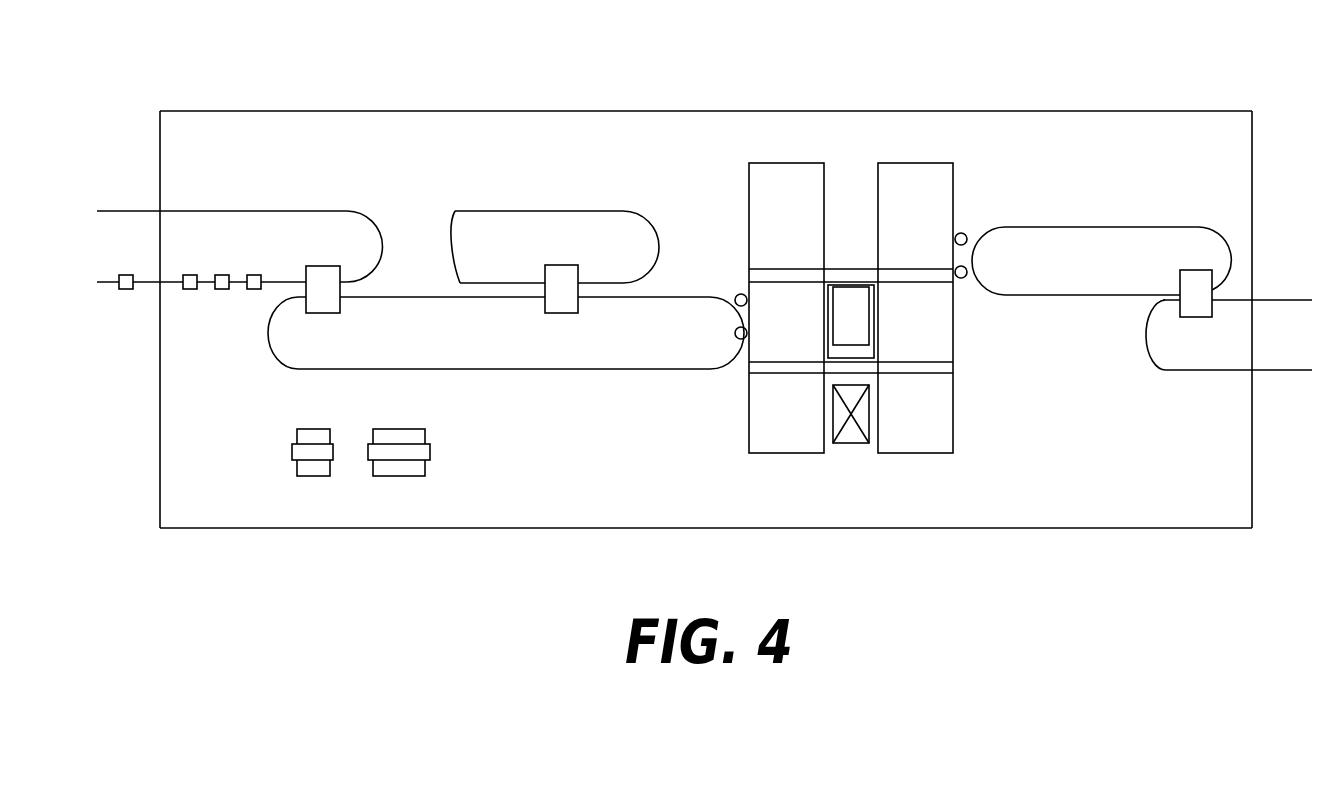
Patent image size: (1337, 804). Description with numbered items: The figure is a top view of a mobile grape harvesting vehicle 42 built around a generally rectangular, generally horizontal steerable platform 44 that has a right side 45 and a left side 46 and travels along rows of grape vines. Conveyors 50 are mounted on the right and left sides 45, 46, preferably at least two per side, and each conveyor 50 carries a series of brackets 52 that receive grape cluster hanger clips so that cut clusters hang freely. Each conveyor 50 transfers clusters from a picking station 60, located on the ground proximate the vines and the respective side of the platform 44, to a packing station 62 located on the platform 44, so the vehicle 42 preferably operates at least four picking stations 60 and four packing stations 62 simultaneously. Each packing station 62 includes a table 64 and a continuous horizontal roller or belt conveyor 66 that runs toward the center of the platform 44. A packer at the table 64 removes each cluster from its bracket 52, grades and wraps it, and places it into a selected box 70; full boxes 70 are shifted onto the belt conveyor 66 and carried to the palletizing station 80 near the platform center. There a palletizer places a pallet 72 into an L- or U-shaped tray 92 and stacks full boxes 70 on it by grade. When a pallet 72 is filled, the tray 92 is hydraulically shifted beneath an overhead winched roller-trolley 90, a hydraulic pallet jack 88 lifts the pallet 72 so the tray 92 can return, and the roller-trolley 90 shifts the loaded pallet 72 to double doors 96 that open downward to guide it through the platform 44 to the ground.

The mobile grape harvesting vehicle 42 is at (720, 51).
The steerable platform 44 is at (547, 111).
The right side 45 is at (160, 148).
The left side 46 is at (1252, 150).
The conveyor 50 is at (183, 215).
The bracket 52 is at (125, 292).
The picking station 60 is at (62, 335).
The packing station 62 is at (355, 290).
The table 64 is at (325, 318).
The belt conveyor 66 is at (1068, 226).
The box 70 is at (293, 437).
The pallet 72 is at (400, 478).
The palletizing station 80 is at (910, 172).
The hydraulic pallet jack 88 is at (739, 295).
The overhead winched roller-trolley 90 is at (935, 270).
The tray 92 is at (843, 290).
The double doors 96 is at (856, 442).